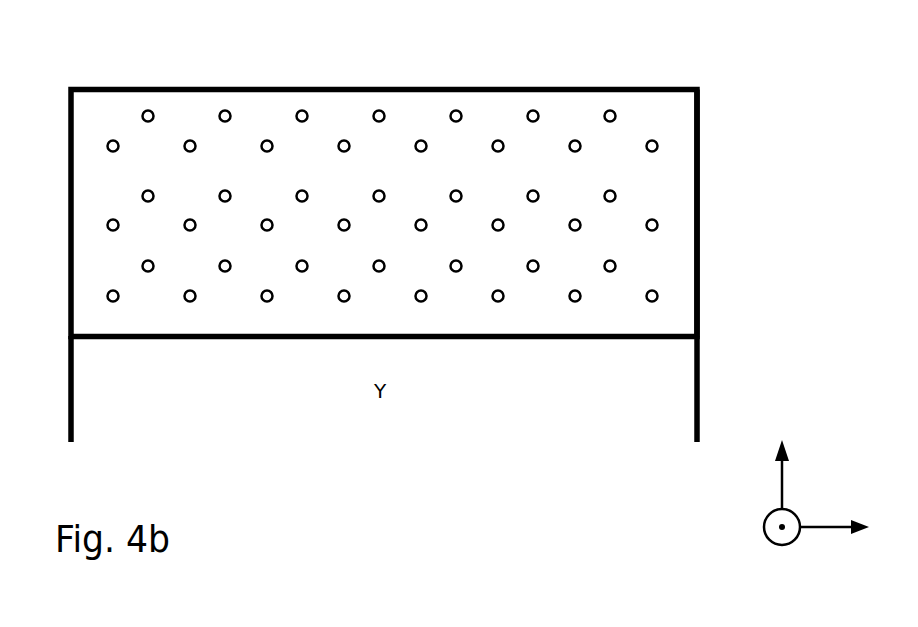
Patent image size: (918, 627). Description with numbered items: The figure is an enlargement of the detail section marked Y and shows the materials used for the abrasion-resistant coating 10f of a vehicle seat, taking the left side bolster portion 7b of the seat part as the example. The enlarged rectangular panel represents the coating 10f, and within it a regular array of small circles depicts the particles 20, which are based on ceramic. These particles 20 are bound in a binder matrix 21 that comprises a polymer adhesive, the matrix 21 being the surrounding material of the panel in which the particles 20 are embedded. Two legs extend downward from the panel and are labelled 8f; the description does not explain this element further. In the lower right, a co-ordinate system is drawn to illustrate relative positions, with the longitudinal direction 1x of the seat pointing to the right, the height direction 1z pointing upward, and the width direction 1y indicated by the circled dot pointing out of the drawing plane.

The particles 20 is at (577, 139).
The binder matrix 21 is at (678, 177).
The left side bolster portion 7b is at (752, 201).
The abrasion-resistant coating 10f is at (699, 257).
The leg 8f is at (672, 401).
The longitudinal direction 1x is at (829, 531).
The width direction 1y is at (763, 530).
The height direction 1z is at (780, 475).